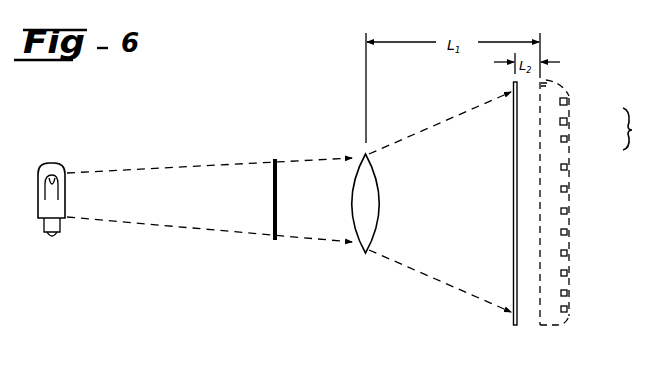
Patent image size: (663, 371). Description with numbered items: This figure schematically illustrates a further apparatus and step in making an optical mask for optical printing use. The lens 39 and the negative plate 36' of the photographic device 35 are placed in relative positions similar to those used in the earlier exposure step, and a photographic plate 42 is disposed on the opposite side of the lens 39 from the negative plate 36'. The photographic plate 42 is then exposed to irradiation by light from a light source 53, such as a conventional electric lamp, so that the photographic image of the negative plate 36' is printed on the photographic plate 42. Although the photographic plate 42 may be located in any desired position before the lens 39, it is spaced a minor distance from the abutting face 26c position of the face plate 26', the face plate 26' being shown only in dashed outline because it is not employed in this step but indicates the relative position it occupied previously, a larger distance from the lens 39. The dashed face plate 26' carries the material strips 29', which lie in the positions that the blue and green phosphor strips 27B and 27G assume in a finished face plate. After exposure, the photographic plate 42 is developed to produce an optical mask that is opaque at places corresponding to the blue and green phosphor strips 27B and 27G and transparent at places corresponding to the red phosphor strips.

The light source 53 is at (48, 165).
The negative plate 36' is at (266, 183).
The photographic device 35 is at (327, 143).
The lens 39 is at (356, 244).
The photographic plate 42 is at (511, 313).
The face plate 26' is at (577, 193).
The abutting face 26c is at (543, 80).
The blue phosphor strips 27B is at (570, 110).
The green phosphor strips 27G is at (570, 128).
The material strips 29' is at (642, 129).